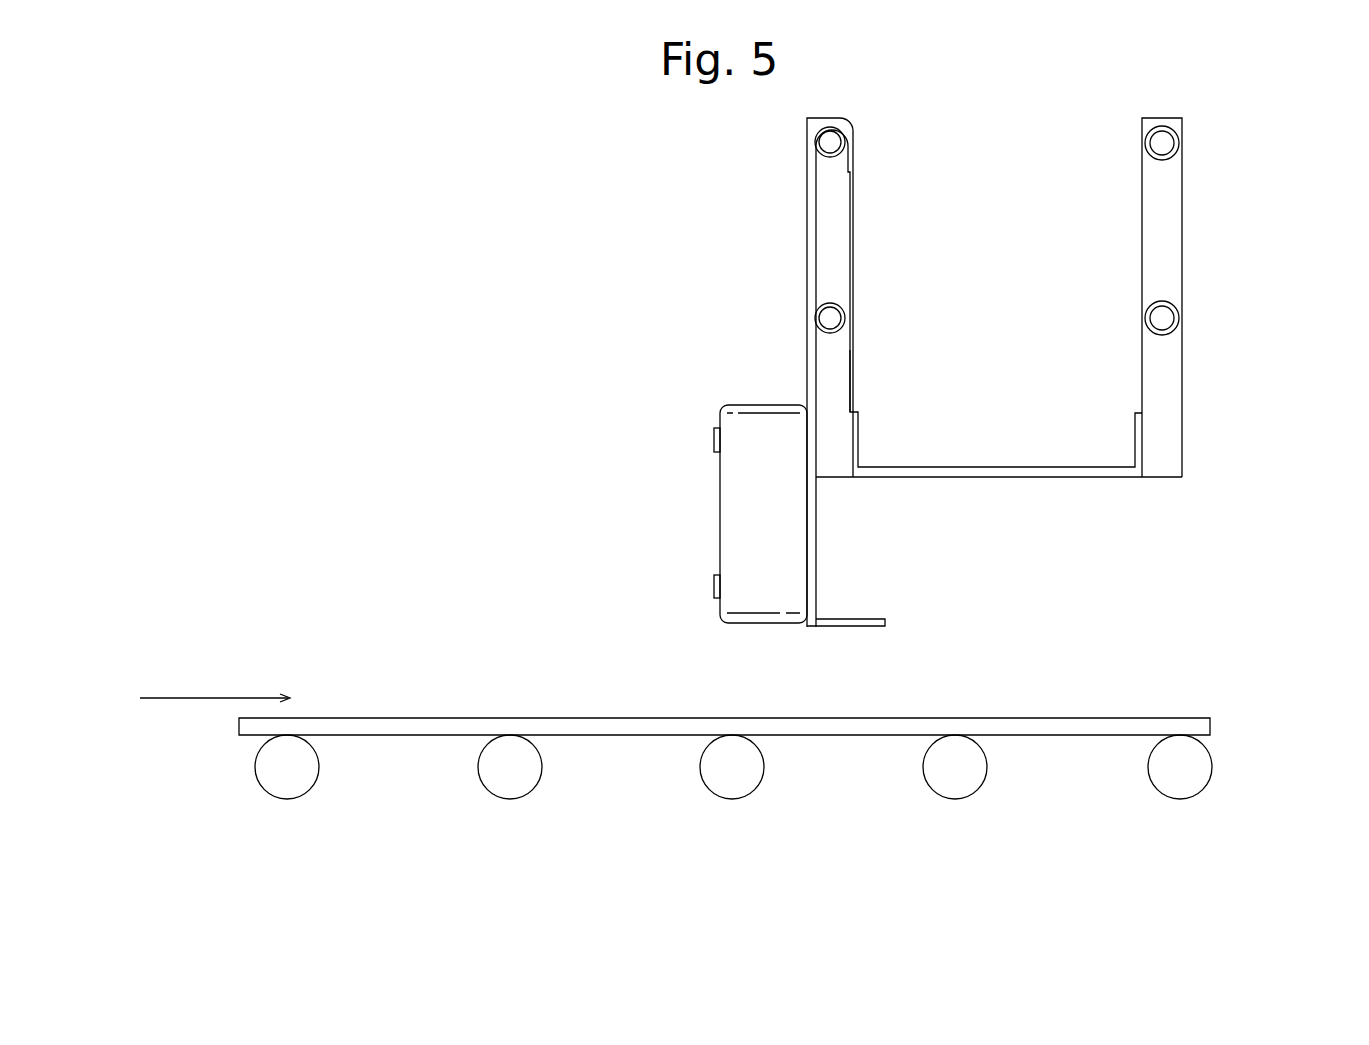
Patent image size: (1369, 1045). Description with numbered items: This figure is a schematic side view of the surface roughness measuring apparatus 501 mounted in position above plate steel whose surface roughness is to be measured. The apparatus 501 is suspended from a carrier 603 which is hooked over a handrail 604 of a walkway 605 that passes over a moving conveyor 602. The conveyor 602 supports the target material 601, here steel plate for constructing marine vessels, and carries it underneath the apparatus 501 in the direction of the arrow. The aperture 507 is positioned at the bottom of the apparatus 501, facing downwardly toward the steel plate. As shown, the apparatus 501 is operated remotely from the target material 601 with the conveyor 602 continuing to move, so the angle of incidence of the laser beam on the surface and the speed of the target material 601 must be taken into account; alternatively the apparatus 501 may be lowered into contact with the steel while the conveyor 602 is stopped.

The apparatus 501 is at (745, 404).
The aperture 507 is at (750, 626).
The target material 601 is at (452, 717).
The conveyor 602 is at (1218, 748).
The carrier 603 is at (807, 268).
The handrail 604 is at (831, 157).
The walkway 605 is at (1190, 220).